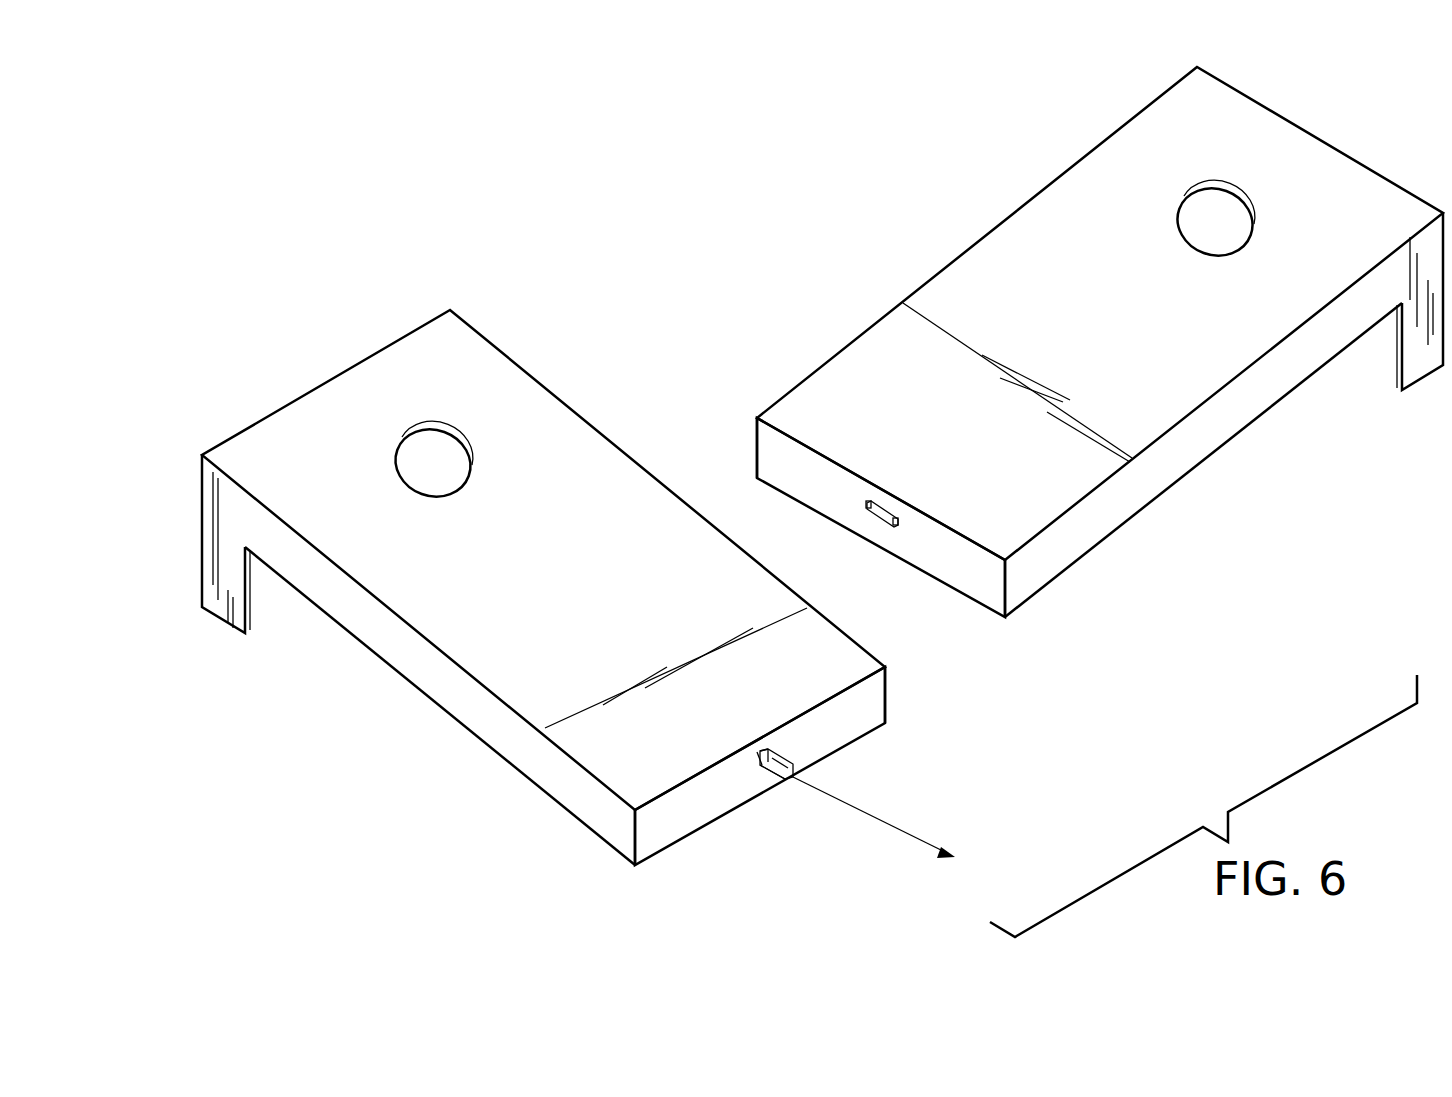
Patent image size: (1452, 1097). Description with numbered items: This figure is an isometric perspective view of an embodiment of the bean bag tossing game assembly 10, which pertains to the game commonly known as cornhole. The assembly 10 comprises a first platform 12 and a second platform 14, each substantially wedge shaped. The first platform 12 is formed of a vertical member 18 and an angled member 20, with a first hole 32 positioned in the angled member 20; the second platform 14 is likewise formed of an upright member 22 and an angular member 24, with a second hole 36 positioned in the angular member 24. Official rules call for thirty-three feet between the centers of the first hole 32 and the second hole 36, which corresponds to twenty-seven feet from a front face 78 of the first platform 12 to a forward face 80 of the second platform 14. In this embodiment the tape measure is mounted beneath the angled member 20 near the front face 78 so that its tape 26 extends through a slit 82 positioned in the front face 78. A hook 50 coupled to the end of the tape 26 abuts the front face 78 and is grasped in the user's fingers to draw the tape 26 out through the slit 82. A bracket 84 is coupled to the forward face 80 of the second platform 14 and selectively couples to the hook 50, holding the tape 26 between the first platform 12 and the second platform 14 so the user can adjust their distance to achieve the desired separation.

The bean bag tossing game assembly 10 is at (782, 243).
The first platform 12 is at (529, 578).
The second platform 14 is at (1100, 371).
The vertical member 18 is at (225, 568).
The angled member 20 is at (390, 650).
The upright member 22 is at (1417, 348).
The angular member 24 is at (1257, 397).
The tape 26 is at (757, 757).
The first hole 32 is at (427, 428).
The second hole 36 is at (1237, 187).
The hook 50 is at (787, 777).
The front face 78 is at (682, 823).
The forward face 80 is at (945, 563).
The slit 82 is at (750, 757).
The bracket 84 is at (878, 517).